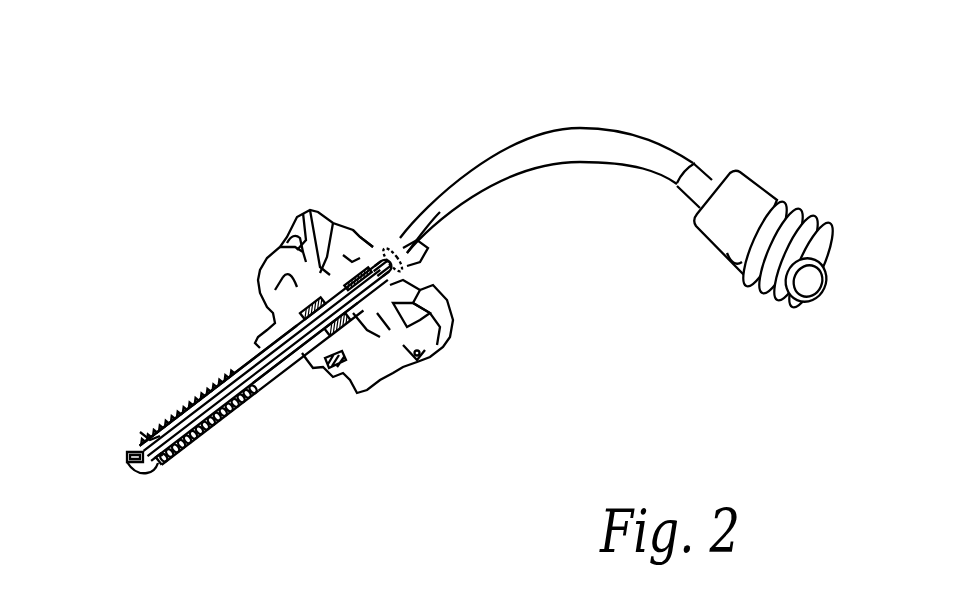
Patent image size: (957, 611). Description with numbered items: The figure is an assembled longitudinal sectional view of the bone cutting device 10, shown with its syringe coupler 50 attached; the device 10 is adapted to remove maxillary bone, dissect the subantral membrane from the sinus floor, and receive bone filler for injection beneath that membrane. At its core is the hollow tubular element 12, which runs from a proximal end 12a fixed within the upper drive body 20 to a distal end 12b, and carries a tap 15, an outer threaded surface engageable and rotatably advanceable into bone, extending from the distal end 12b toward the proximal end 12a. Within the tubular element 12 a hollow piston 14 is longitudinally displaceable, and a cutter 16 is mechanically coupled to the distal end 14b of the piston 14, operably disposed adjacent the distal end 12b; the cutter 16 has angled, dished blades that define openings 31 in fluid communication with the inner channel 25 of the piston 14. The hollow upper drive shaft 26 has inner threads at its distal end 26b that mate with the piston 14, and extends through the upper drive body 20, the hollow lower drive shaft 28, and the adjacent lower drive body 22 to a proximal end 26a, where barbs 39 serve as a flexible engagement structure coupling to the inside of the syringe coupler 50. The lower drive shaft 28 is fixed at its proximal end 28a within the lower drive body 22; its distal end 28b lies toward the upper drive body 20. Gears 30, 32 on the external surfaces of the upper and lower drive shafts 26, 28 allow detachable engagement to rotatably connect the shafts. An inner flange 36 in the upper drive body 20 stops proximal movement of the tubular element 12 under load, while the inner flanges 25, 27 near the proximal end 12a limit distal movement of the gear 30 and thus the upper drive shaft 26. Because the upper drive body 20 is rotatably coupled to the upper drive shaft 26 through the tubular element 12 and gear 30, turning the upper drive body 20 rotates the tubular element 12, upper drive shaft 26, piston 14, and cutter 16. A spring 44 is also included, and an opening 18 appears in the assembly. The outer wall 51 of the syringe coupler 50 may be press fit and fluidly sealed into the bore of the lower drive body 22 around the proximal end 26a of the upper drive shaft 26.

The bone cutting device 10 is at (395, 91).
The hollow tubular element 12 is at (233, 352).
The proximal end 12a is at (277, 258).
The distal end 12b is at (158, 470).
The hollow piston 14 is at (202, 428).
The distal end 14b is at (167, 468).
The tap 15 is at (190, 402).
The cutter 16 is at (128, 455).
The opening 18 is at (268, 320).
The upper drive body 20 is at (378, 370).
The lower drive body 22 is at (447, 340).
The inner flange 25 is at (223, 425).
The upper drive shaft 26 is at (343, 255).
The proximal end 26a is at (405, 250).
The distal end 26b is at (265, 395).
The inner flange 27 is at (265, 360).
The lower drive shaft 28 is at (360, 248).
The proximal end 28a is at (410, 272).
The hub distal portion 28b is at (347, 375).
The gear 30 is at (268, 262).
The openings 31 is at (128, 462).
The gear 32 is at (398, 367).
The inner flange 36 is at (315, 207).
The barbs 39 is at (405, 270).
The spring 44 is at (292, 247).
The syringe coupler 50 is at (585, 143).
The outer wall 51 is at (431, 205).